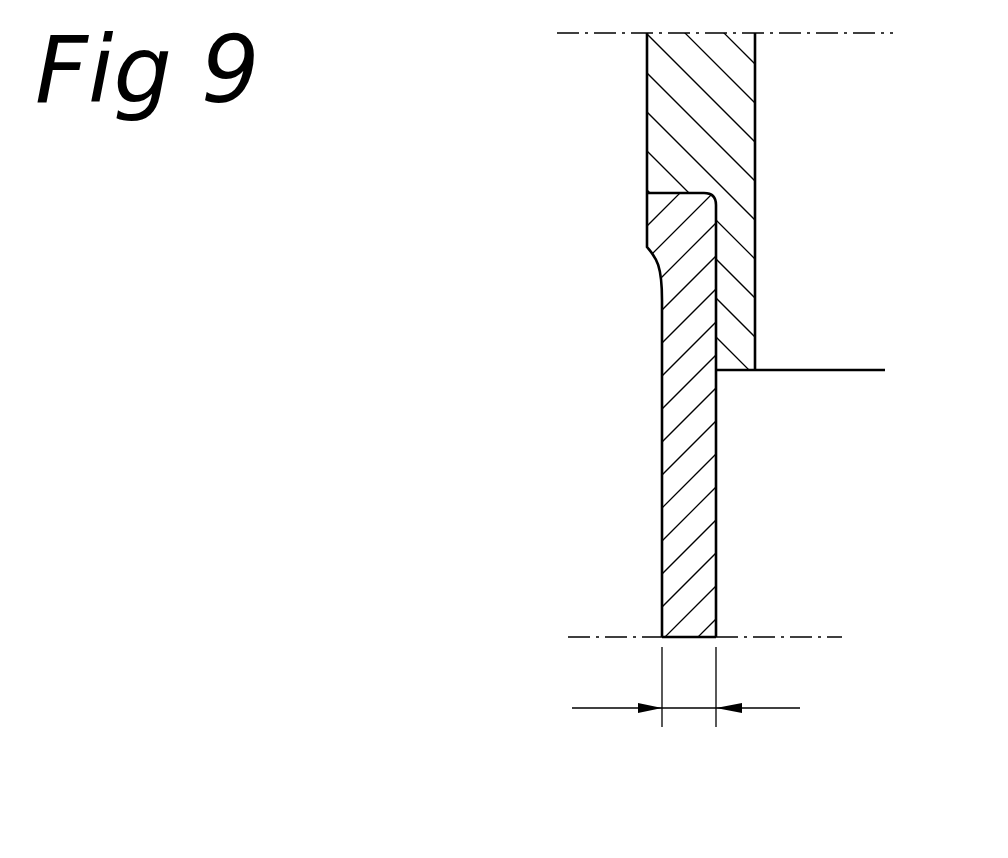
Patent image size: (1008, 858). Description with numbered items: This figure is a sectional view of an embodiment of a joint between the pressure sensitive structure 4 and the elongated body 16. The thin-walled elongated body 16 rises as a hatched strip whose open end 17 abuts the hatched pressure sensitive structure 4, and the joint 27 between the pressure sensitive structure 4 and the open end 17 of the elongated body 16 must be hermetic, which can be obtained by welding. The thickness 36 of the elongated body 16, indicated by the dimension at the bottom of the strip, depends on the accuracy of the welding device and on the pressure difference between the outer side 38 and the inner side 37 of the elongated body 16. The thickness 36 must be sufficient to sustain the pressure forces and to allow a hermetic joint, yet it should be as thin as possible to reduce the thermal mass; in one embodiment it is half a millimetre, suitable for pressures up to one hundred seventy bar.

The pressure sensitive structure 4 is at (733, 133).
The elongated body 16 is at (675, 443).
The open end of the elongated body 17 is at (677, 277).
The joint 27 is at (645, 193).
The thickness of the elongated body 36 is at (688, 707).
The inner side of the elongated body 37 is at (716, 562).
The outer side of the elongated body 38 is at (662, 558).